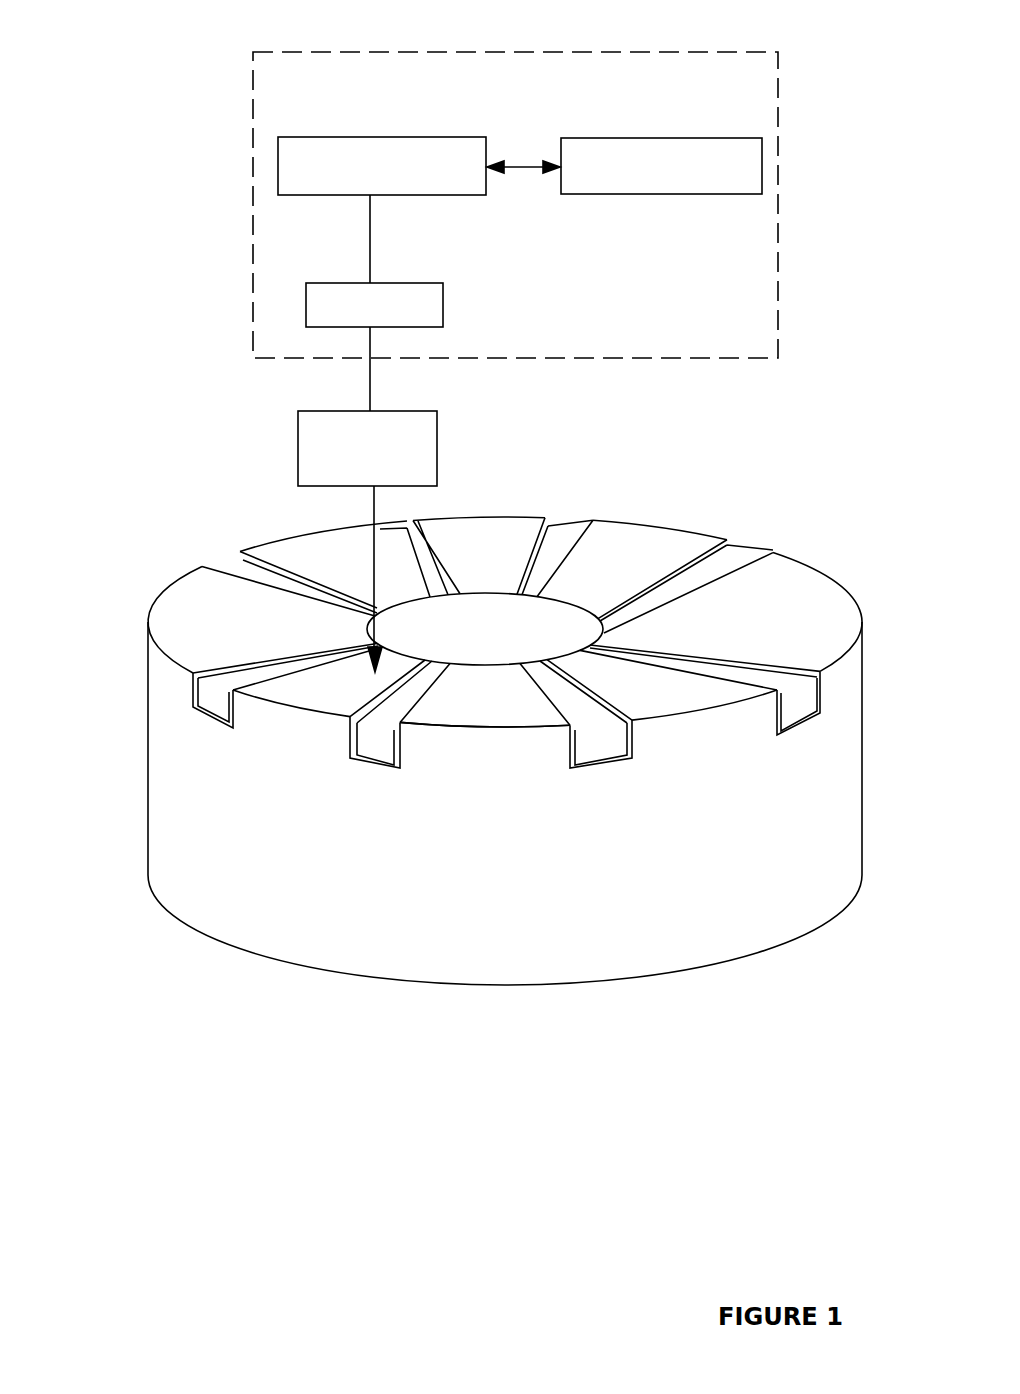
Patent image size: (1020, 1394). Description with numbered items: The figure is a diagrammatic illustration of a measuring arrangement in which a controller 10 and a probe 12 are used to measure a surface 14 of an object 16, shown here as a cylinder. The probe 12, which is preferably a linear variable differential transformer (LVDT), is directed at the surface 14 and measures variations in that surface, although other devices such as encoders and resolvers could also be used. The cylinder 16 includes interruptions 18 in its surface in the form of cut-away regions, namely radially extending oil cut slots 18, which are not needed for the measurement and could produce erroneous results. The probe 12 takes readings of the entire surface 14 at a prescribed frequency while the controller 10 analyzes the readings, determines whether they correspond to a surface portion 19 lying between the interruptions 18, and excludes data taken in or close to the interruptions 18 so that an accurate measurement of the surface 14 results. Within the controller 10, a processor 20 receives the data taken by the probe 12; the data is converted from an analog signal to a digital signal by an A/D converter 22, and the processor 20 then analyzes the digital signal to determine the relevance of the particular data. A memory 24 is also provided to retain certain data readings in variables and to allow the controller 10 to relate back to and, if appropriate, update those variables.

The controller 10 is at (253, 62).
The probe 12 is at (298, 451).
The surface 14 is at (194, 603).
The object 16 is at (203, 802).
The interruptions 18 is at (603, 745).
The surface portion 19 is at (525, 692).
The processor 20 is at (283, 137).
The A/D converter 22 is at (315, 283).
The memory 24 is at (650, 138).